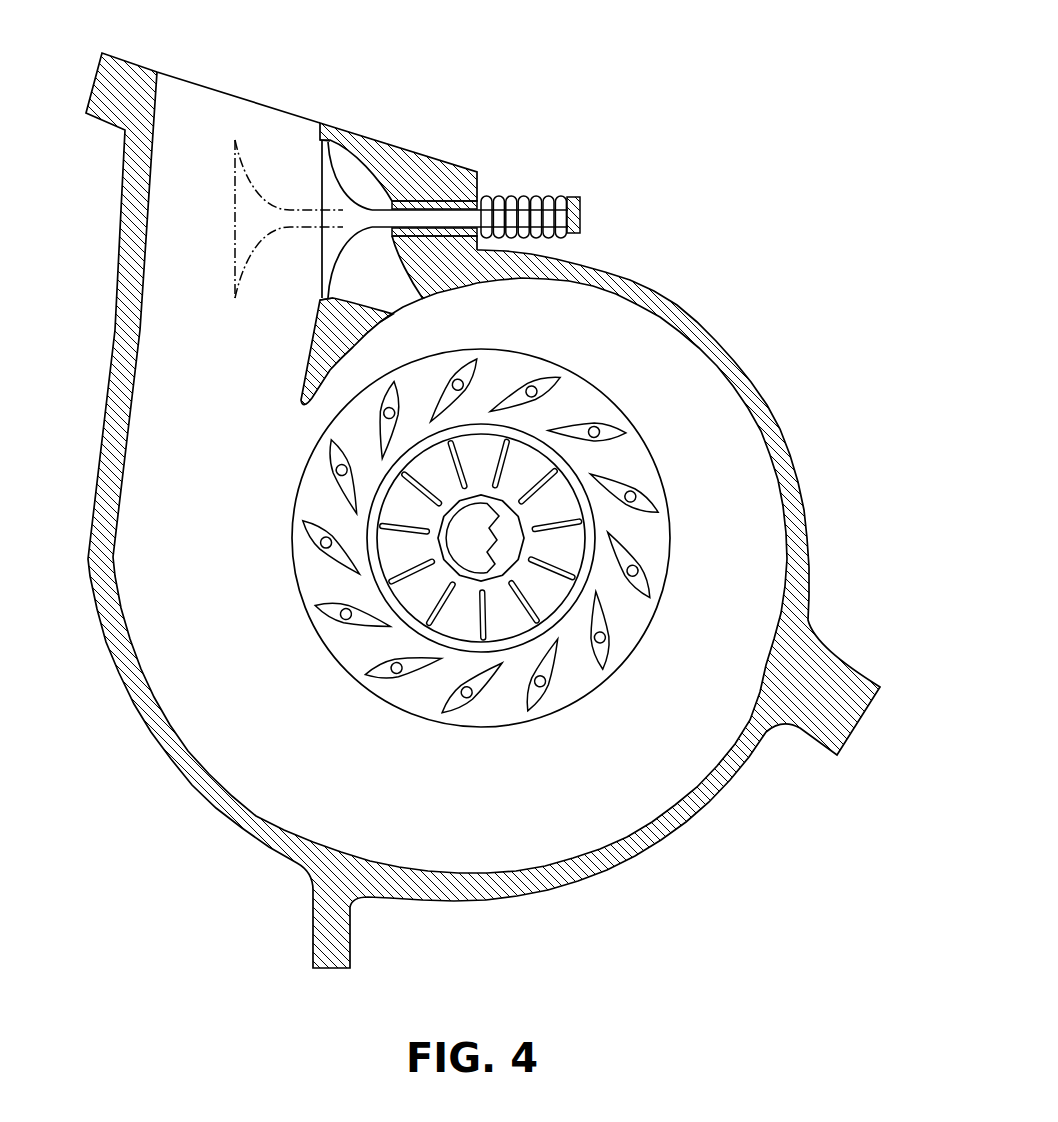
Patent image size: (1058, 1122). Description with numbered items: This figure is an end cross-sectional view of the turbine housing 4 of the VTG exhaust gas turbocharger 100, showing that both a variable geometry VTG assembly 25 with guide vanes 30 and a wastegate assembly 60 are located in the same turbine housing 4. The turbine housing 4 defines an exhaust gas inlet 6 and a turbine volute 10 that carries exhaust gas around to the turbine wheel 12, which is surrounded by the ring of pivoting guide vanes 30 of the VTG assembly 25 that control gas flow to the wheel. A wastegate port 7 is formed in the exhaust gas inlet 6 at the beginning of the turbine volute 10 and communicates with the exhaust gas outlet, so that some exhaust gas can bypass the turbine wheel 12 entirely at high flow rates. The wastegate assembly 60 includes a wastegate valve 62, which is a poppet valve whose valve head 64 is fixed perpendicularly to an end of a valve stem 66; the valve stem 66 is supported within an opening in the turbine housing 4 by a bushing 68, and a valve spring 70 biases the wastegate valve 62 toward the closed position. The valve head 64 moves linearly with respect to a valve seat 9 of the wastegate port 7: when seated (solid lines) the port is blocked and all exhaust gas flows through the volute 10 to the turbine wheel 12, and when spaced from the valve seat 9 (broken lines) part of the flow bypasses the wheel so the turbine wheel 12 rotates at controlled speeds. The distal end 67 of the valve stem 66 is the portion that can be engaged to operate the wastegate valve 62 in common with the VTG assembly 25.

The exhaust gas turbocharger 100 is at (762, 102).
The turbine housing 4 is at (680, 815).
The exhaust gas inlet 6 is at (207, 175).
The wastegate port 7 is at (372, 285).
The valve seat 9 is at (320, 296).
The turbine volute 10 is at (197, 422).
The turbine wheel 12 is at (570, 548).
The VTG assembly 25 is at (685, 373).
The guide vanes 30 is at (603, 668).
The wastegate assembly 60 is at (451, 62).
The wastegate valve 62 is at (368, 195).
The valve head 64 is at (329, 163).
The valve stem 66 is at (458, 215).
The distal end 67 is at (574, 195).
The bushing 68 is at (420, 195).
The valve spring 70 is at (530, 195).